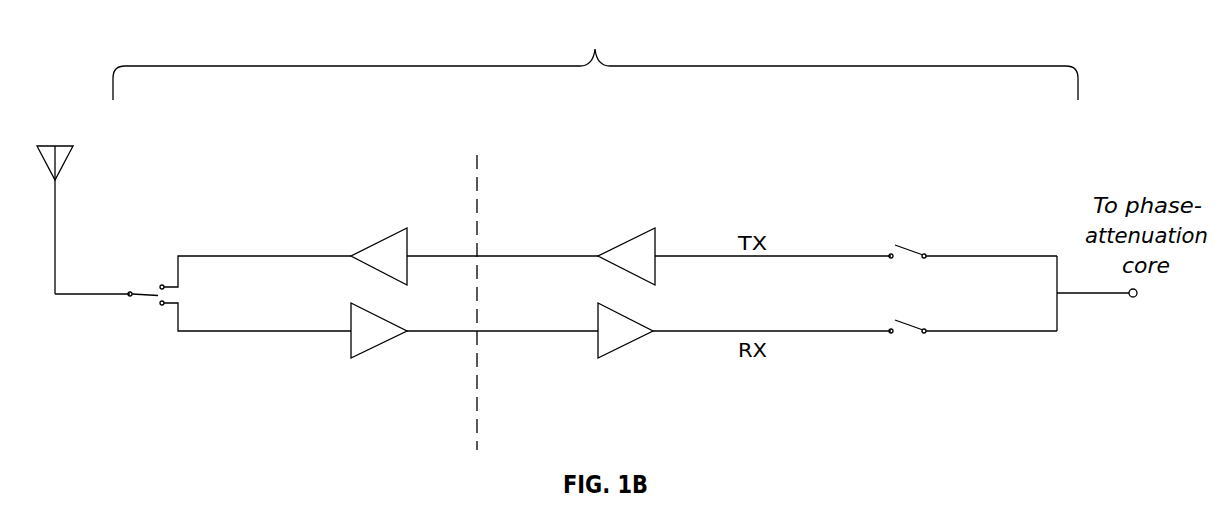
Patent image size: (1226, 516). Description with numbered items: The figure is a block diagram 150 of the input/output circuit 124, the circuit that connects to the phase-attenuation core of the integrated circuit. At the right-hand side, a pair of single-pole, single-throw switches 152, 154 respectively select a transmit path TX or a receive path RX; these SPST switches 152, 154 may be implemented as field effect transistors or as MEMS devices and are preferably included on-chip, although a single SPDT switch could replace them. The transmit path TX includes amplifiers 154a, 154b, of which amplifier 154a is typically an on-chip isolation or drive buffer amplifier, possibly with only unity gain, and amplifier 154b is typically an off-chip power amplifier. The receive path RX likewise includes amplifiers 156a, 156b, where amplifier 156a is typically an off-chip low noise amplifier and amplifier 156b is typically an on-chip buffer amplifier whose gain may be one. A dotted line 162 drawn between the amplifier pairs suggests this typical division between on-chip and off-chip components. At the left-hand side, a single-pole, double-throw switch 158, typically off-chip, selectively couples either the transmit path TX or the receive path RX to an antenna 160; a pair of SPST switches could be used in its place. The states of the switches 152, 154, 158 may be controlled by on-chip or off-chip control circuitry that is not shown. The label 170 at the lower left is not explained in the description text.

The block diagram 150 is at (130, 18).
The lower section label 170 is at (123, 514).
The input/output circuit 124 is at (595, 56).
The antenna 160 is at (75, 163).
The single-pole, double-throw switch 158 is at (148, 277).
The amplifier 154b is at (377, 237).
The amplifier 156a is at (377, 358).
The dotted line 162 is at (477, 182).
The amplifier 154a is at (655, 220).
The amplifier 156b is at (597, 370).
The single-pole, single-throw switch 152 is at (922, 238).
The single-pole, single-throw switch 154 is at (918, 345).